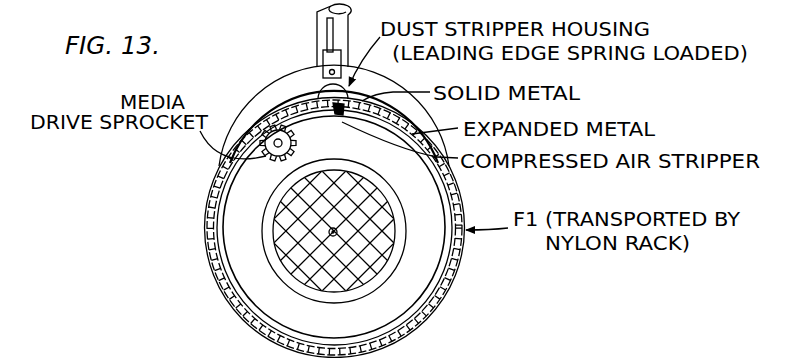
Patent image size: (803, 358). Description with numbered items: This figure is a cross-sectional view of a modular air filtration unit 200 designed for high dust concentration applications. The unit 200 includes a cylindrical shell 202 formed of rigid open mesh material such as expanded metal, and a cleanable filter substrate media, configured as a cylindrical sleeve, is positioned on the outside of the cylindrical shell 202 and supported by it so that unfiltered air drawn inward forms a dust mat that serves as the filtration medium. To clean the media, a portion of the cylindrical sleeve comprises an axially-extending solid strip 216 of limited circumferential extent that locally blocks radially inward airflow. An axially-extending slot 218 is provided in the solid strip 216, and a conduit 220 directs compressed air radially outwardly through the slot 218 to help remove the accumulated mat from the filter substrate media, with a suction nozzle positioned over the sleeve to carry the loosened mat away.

The modular air filtration unit 200 is at (178, 186).
The cylindrical shell 202 is at (240, 298).
The solid strip 216 is at (297, 110).
The slot 218 is at (322, 90).
The conduit 220 is at (340, 115).